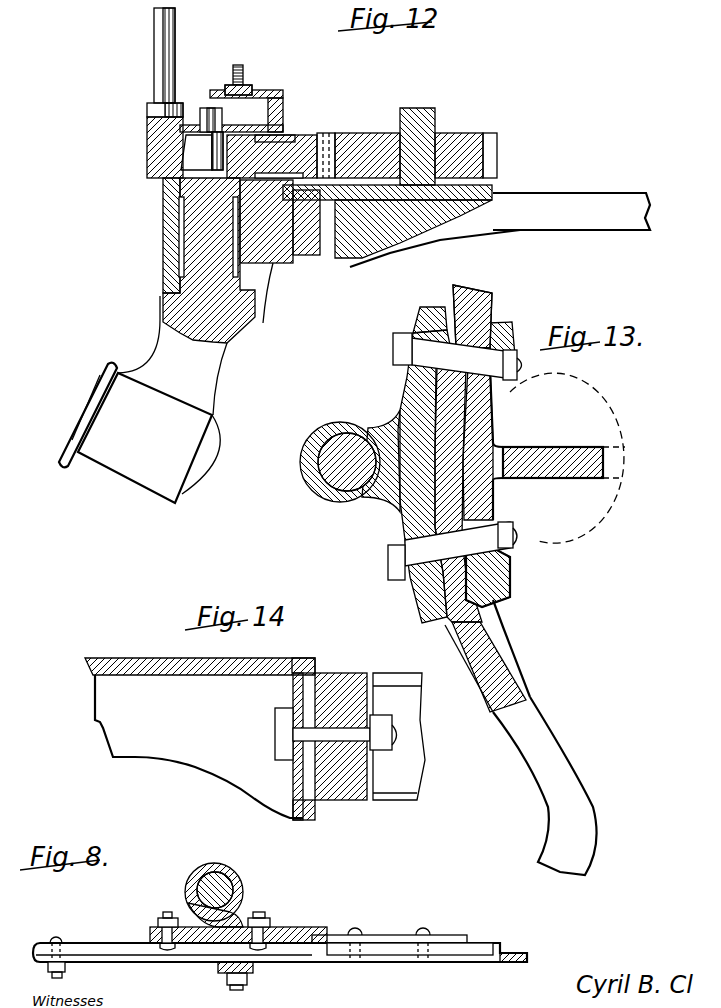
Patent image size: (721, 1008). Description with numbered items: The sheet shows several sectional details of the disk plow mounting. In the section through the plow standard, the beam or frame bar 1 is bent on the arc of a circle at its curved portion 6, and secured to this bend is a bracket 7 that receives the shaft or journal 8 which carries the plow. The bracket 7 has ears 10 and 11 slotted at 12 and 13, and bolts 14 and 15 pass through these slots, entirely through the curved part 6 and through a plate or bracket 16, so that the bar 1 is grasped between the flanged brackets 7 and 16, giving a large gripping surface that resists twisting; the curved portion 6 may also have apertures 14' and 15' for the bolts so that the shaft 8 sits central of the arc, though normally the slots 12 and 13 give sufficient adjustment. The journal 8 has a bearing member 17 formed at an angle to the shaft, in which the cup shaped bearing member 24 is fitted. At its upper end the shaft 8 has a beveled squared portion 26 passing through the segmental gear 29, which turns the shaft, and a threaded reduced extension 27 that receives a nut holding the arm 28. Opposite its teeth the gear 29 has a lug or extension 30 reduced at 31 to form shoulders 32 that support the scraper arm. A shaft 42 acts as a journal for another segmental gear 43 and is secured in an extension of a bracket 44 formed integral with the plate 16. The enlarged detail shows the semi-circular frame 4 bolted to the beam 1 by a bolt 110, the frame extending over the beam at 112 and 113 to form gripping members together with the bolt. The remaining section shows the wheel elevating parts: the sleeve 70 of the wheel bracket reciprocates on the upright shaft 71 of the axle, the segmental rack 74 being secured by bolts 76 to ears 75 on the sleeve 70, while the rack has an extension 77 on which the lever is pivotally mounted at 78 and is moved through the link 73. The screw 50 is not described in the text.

In FIG. 12, the beam or frame bar 1 is at (300, 253).
In FIG. 13, the beam or frame bar 1 is at (597, 810).
In FIG. 14, the beam or frame bar 1 is at (336, 673).
In FIG. 12, the semi-circular frame member 4 is at (630, 220).
In FIG. 14, the semi-circular frame member 4 is at (244, 668).
In FIG. 13, the curved portion of beam 6 is at (508, 645).
In FIG. 12, the bracket 7 is at (163, 262).
In FIG. 13, the bracket 7 is at (302, 472).
In FIG. 12, the shaft or journal 8 is at (207, 223).
In FIG. 13, the shaft or journal 8 is at (340, 500).
In FIG. 13, the ear 10 is at (433, 625).
In FIG. 13, the ear 11 is at (416, 318).
In FIG. 13, the slot 12 is at (418, 578).
In FIG. 12, the slot 13 is at (325, 205).
In FIG. 13, the slot 13 is at (411, 368).
In FIG. 13, the bolt 14 is at (462, 551).
In FIG. 13, the aperture 14' is at (548, 479).
In FIG. 13, the bolt 15 is at (445, 372).
In FIG. 13, the aperture 15' is at (505, 326).
In FIG. 13, the plate or bracket 16 is at (497, 582).
In FIG. 12, the bearing member 17 is at (140, 482).
In FIG. 12, the cup shaped bearing member 24 is at (197, 480).
In FIG. 12, the beveled squared portion 26 is at (195, 152).
In FIG. 12, the reduced extension 27 is at (206, 112).
In FIG. 12, the arm 28 is at (237, 116).
In FIG. 12, the segmental gear 29 is at (303, 134).
In FIG. 12, the lug or extension 30 is at (148, 126).
In FIG. 12, the reduced portion 31 is at (152, 62).
In FIG. 12, the shoulders 32 is at (148, 106).
In FIG. 12, the shaft 42 is at (437, 110).
In FIG. 12, the segmental gear 43 is at (362, 136).
In FIG. 12, the bracket 44 is at (482, 207).
In FIG. 13, the bracket 44 is at (620, 515).
In FIG. 12, the screw 50 is at (252, 86).
In FIG. 8, the sleeve 70 is at (212, 886).
In FIG. 8, the upright shaft 71 is at (228, 874).
In FIG. 8, the link 73 is at (48, 972).
In FIG. 8, the segmental rack 74 is at (336, 938).
In FIG. 8, the ears 75 is at (150, 934).
In FIG. 8, the bolts 76 is at (160, 914).
In FIG. 8, the extension 77 is at (90, 943).
In FIG. 8, the pivot 78 is at (55, 939).
In FIG. 14, the bolt 110 is at (384, 745).
In FIG. 14, the overlapping portion of frame 112 is at (308, 652).
In FIG. 14, the overlapping portion of frame 113 is at (302, 814).